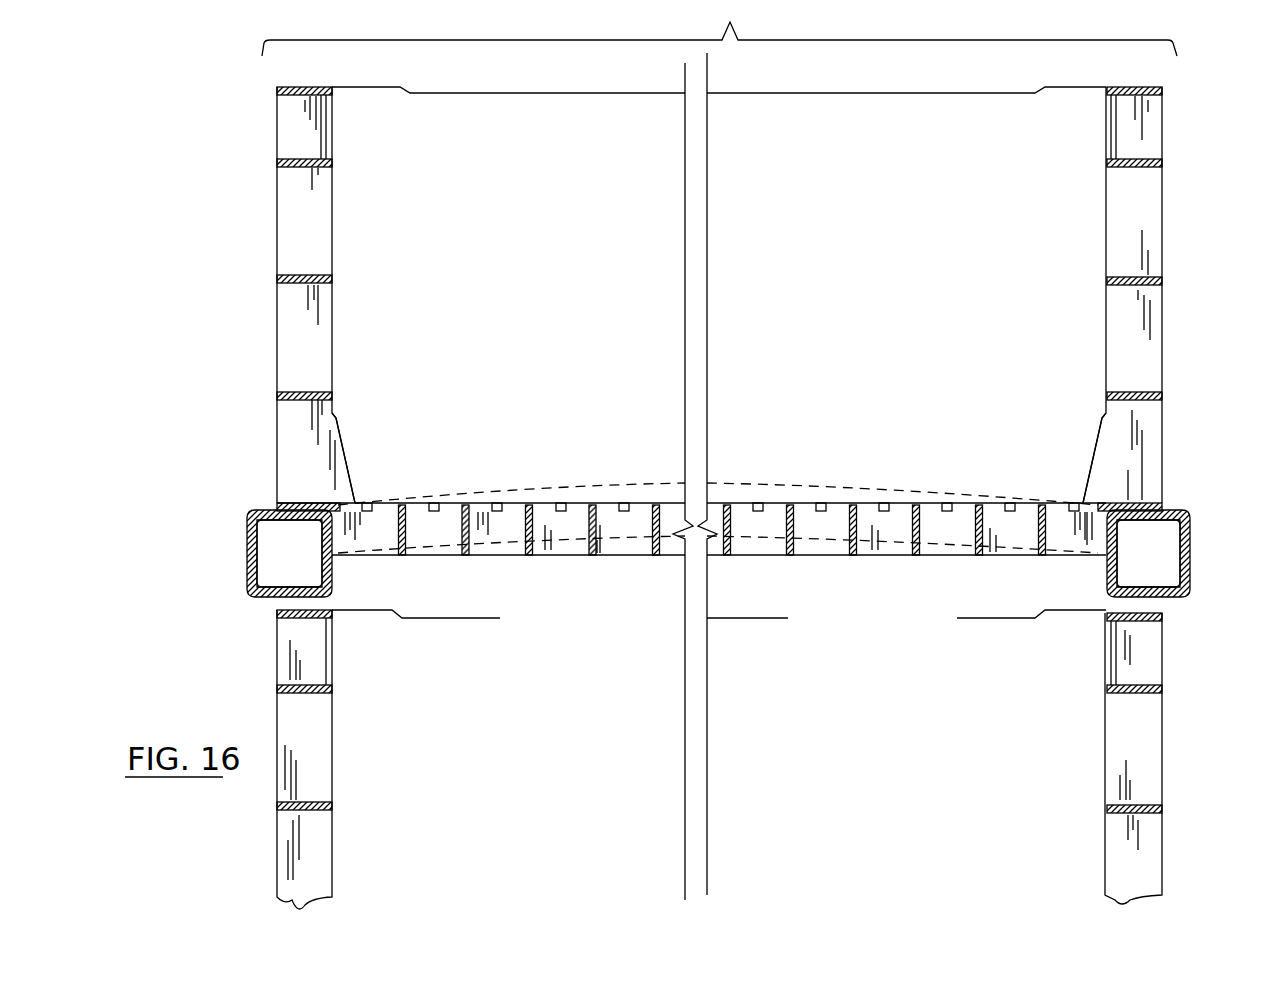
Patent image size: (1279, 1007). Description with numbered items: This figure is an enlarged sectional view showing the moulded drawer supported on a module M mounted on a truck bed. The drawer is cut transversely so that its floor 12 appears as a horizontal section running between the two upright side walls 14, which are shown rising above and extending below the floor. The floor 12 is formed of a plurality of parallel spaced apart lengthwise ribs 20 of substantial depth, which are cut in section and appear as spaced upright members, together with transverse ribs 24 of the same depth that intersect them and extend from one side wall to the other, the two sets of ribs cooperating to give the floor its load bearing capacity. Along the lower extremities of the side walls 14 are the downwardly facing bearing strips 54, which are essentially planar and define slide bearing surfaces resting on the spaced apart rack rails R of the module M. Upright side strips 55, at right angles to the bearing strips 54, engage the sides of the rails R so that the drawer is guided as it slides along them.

The floor 12 is at (603, 484).
The side walls 14 is at (355, 231).
The lengthwise ribs 20 is at (590, 545).
The transverse ribs 24 is at (610, 550).
The bearing strips 54 is at (310, 503).
The upright side strips 55 is at (343, 536).
The rack rails R is at (248, 535).
The module M is at (219, 580).